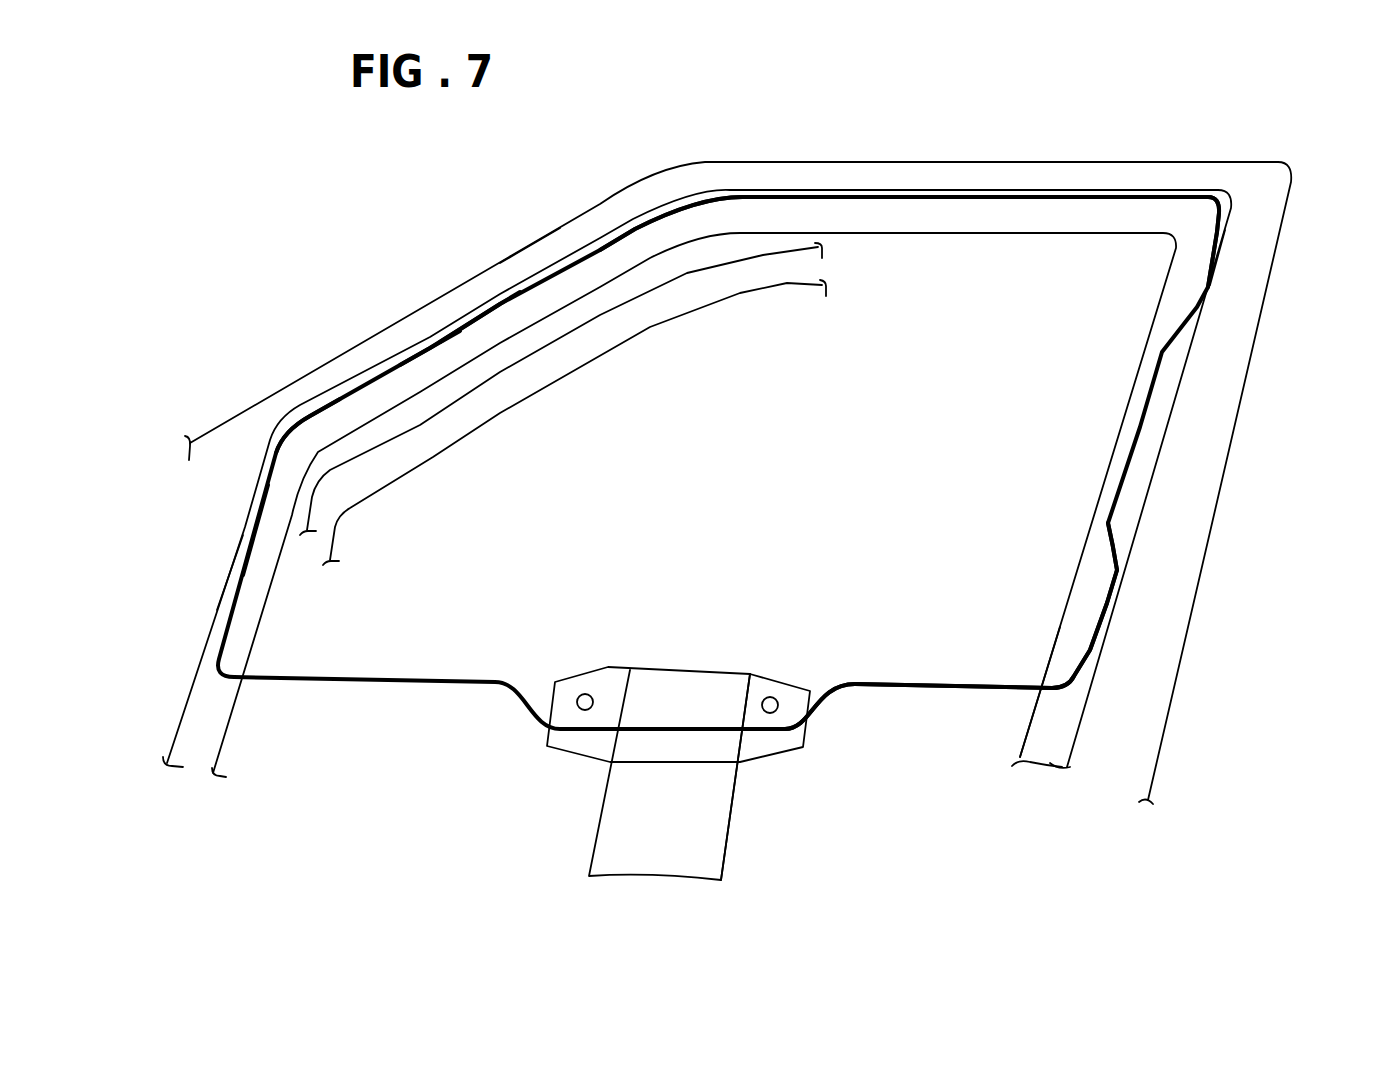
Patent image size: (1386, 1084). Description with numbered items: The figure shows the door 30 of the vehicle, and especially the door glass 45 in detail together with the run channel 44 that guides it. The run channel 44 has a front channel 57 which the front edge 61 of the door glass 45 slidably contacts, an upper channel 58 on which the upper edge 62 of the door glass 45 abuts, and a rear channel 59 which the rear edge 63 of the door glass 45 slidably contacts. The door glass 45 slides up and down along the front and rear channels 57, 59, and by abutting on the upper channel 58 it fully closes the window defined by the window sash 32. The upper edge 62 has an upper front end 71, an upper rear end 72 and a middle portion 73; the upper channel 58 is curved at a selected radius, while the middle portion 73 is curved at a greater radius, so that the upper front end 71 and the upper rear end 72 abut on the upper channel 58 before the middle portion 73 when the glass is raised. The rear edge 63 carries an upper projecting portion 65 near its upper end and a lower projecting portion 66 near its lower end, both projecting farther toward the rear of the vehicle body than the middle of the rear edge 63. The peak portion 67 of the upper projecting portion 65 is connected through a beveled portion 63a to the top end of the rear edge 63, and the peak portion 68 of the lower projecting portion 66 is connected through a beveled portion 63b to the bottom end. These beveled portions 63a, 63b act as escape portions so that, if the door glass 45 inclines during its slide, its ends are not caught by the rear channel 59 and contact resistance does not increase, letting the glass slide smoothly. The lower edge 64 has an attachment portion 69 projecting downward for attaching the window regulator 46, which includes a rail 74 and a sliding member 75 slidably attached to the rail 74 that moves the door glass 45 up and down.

The door 30 is at (250, 165).
The window sash 32 is at (1007, 178).
The run channel 44 is at (479, 316).
The door glass 45 is at (766, 250).
The window regulator 46 is at (742, 843).
The front channel 57 is at (229, 570).
The upper channel 58 is at (531, 274).
The rear channel 59 is at (1080, 720).
The front edge 61 is at (250, 522).
The upper edge 62 is at (429, 347).
The rear edge 63 is at (1153, 424).
The upper beveled portion 63a is at (1220, 225).
The lower beveled portion 63b is at (1090, 650).
The lower edge 64 is at (863, 697).
The upper projecting portion 65 is at (1193, 267).
The lower projecting portion 66 is at (1102, 578).
The peak portion 67 is at (1208, 286).
The peak portion 68 is at (1107, 609).
The attachment portion 69 is at (786, 711).
The upper front end 71 is at (320, 410).
The upper rear end 72 is at (1167, 193).
The middle portion 73 is at (681, 213).
The rail 74 is at (603, 818).
The sliding member 75 is at (544, 735).